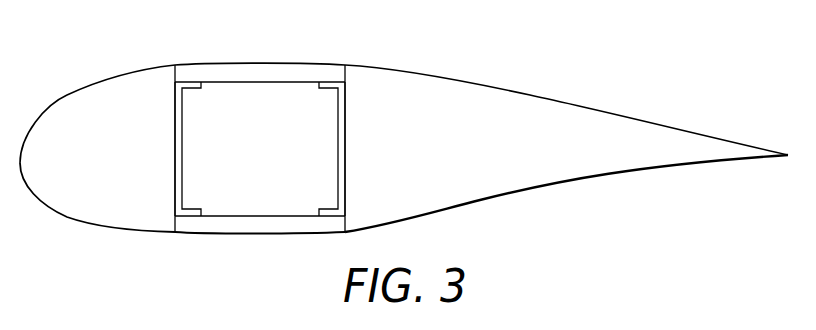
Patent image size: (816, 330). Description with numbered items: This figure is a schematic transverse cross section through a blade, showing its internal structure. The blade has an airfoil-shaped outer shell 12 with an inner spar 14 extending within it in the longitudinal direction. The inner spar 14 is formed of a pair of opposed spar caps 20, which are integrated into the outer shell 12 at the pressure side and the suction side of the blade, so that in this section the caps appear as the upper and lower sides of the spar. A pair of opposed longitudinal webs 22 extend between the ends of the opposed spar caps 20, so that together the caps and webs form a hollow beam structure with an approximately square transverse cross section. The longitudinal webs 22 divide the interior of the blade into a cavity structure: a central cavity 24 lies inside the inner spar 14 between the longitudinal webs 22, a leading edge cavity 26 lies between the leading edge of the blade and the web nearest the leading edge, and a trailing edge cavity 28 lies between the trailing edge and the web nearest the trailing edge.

The outer shell 12 is at (533, 94).
The inner spar 14 is at (200, 219).
The spar caps 20 is at (258, 72).
The longitudinal webs 22 is at (175, 110).
The central cavity 24 is at (260, 149).
The leading edge cavity 26 is at (119, 148).
The trailing edge cavity 28 is at (444, 148).